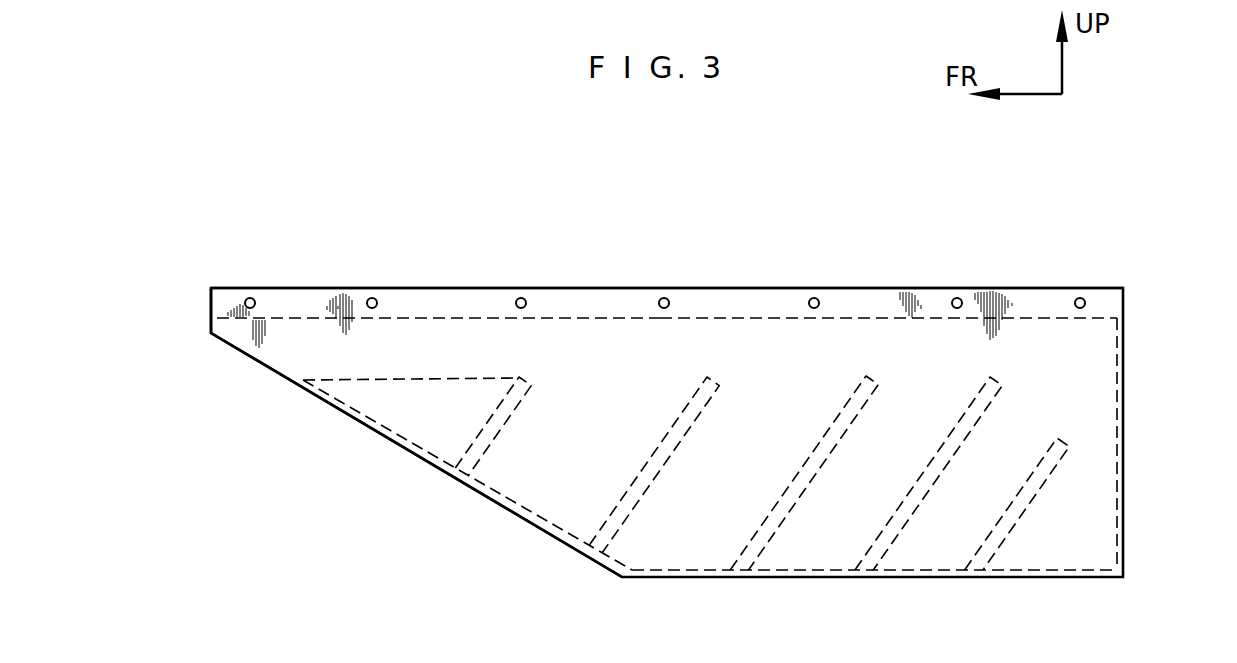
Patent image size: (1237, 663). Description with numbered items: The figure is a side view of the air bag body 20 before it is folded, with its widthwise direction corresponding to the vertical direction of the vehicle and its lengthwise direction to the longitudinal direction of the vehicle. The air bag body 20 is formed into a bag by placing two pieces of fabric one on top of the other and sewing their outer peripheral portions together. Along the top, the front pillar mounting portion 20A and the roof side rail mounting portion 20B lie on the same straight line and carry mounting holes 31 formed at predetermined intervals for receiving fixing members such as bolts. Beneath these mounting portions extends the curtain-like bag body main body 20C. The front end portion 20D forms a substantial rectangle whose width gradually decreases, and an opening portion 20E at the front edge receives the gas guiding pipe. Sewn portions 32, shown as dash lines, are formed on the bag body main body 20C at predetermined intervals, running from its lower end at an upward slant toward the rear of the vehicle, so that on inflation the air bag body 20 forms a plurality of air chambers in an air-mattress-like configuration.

The air bag body 20 is at (1047, 283).
The front pillar mounting portion 20A is at (438, 300).
The roof side rail mounting portion 20B is at (877, 300).
The bag body main body 20C is at (1084, 406).
The front end portion 20D is at (425, 466).
The opening portion 20E is at (280, 358).
The mounting holes 31 is at (252, 298).
The sewn portions 32 is at (627, 487).